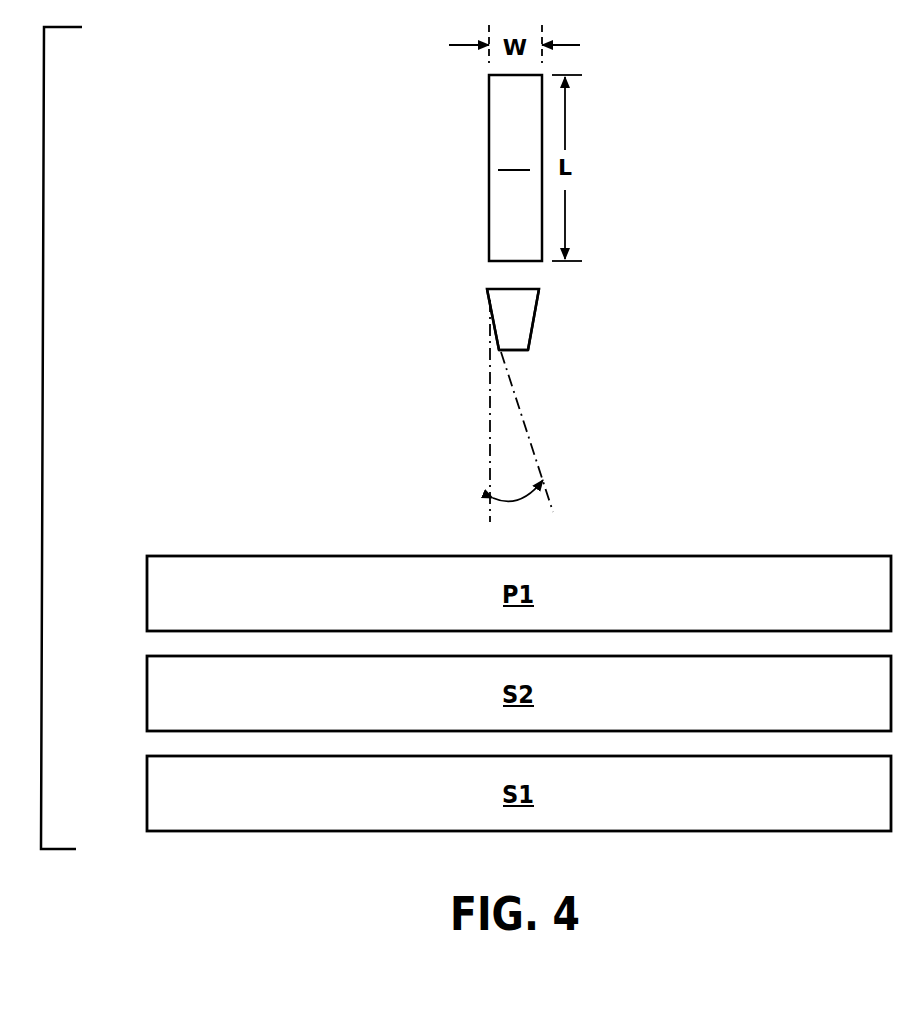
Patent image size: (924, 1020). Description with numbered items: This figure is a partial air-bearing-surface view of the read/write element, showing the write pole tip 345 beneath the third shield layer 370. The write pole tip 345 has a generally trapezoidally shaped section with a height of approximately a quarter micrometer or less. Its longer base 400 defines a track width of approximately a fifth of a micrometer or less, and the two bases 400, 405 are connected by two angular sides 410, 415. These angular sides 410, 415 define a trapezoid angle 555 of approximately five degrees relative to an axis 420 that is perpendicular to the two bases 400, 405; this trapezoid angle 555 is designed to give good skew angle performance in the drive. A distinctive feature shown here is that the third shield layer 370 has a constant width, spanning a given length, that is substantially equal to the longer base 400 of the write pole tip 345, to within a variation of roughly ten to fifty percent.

The S3 layer 370 is at (489, 168).
The longer base 400 is at (502, 289).
The angular side 415 is at (537, 310).
The angular side 410 is at (494, 330).
The base 405 is at (517, 351).
The write pole tip 345 is at (536, 327).
The axis 420 is at (490, 463).
The trapezoid angle 555 is at (523, 442).